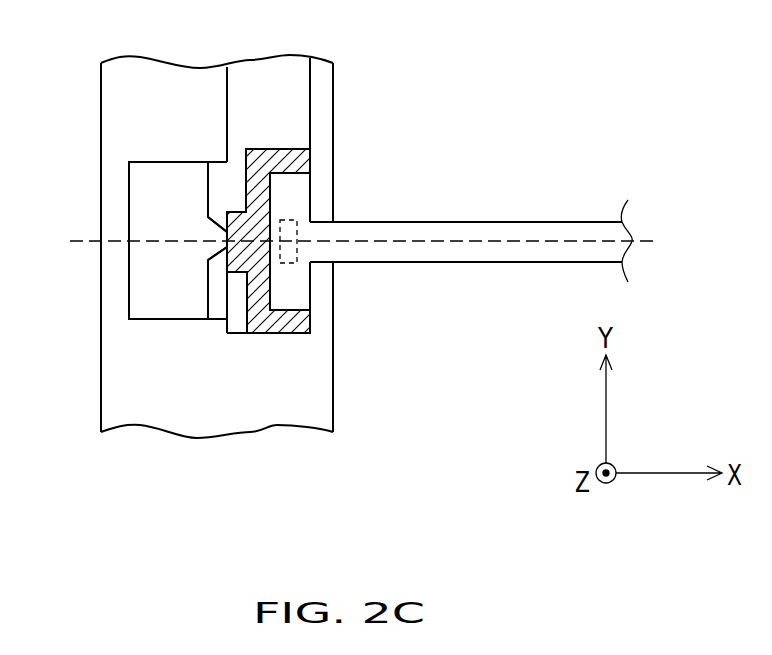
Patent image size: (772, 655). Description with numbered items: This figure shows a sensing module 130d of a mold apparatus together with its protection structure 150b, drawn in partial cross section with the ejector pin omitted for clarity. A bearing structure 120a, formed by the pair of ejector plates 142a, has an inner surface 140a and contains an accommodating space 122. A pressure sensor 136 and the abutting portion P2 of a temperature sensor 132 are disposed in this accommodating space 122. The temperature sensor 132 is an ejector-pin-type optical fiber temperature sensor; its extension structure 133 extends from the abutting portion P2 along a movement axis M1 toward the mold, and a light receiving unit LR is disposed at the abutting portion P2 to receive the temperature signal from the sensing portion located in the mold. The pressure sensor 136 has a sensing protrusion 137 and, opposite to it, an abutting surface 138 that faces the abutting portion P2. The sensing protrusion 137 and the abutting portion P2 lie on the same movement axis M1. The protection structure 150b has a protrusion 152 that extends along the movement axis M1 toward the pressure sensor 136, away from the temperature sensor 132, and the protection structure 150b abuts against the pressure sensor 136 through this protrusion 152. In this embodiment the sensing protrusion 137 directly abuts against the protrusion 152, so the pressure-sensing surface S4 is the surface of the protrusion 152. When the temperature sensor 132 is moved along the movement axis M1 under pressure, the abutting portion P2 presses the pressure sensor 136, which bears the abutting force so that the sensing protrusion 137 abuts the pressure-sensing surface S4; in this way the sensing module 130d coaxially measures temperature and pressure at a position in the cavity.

The bearing structure 120a is at (244, 272).
The inner surface of cover 140a is at (307, 408).
The ejector plates 142a is at (115, 103).
The abutting surface 138 is at (128, 270).
The pressure sensor 136 is at (143, 307).
The sensing protrusion 137 is at (219, 228).
The protection structure 150b is at (281, 149).
The protrusion 152 is at (236, 212).
The temperature sensor 132 is at (288, 293).
The accommodating space 122 is at (237, 334).
The extension structure 133 is at (465, 262).
The movement axis M1 is at (385, 243).
The light receiving unit LR is at (297, 263).
The pressure-sensing surface S4 is at (227, 270).
The abutting portion P2 is at (311, 183).
The sensing module 130d is at (342, 210).